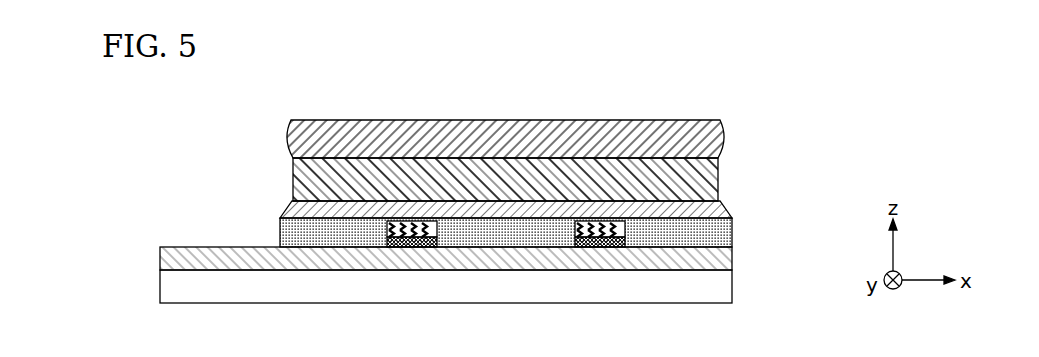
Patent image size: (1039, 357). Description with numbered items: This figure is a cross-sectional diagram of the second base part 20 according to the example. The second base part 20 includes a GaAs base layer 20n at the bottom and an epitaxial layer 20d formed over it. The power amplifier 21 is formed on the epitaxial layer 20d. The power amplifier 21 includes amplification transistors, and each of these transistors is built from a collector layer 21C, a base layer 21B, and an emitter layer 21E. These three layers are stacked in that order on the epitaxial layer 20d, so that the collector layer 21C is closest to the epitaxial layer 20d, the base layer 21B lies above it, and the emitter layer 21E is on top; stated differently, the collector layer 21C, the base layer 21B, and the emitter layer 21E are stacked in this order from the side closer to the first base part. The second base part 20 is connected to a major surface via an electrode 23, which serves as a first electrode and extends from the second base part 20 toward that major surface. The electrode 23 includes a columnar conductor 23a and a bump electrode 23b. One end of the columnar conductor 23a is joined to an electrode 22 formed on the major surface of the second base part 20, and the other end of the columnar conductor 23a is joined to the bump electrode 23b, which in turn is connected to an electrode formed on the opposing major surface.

The second base part 20 is at (792, 107).
The GaAs base layer 20n is at (723, 290).
The epitaxial layer 20d is at (723, 260).
The power amplifier 21 is at (506, 232).
The emitter layer 21E is at (387, 221).
The base layer 21B is at (387, 230).
The collector layer 21C is at (387, 243).
The electrode 22 is at (307, 211).
The electrode 23 is at (442, 160).
The columnar conductor 23a is at (303, 180).
The bump electrode 23b is at (295, 142).